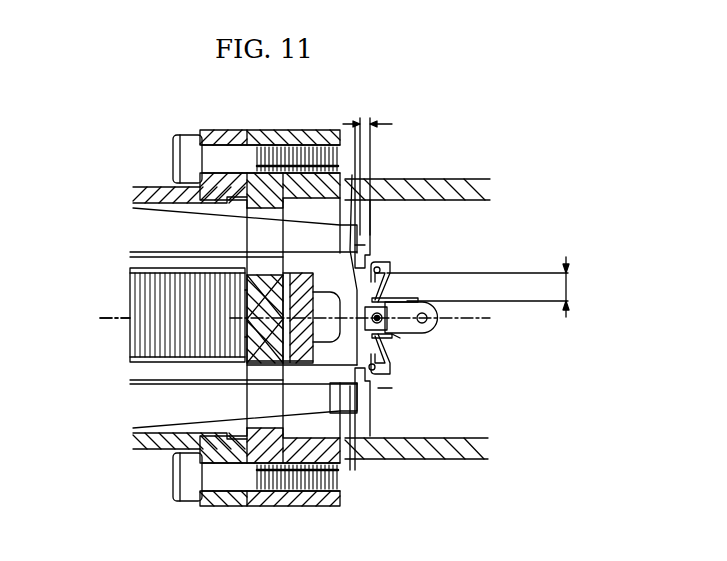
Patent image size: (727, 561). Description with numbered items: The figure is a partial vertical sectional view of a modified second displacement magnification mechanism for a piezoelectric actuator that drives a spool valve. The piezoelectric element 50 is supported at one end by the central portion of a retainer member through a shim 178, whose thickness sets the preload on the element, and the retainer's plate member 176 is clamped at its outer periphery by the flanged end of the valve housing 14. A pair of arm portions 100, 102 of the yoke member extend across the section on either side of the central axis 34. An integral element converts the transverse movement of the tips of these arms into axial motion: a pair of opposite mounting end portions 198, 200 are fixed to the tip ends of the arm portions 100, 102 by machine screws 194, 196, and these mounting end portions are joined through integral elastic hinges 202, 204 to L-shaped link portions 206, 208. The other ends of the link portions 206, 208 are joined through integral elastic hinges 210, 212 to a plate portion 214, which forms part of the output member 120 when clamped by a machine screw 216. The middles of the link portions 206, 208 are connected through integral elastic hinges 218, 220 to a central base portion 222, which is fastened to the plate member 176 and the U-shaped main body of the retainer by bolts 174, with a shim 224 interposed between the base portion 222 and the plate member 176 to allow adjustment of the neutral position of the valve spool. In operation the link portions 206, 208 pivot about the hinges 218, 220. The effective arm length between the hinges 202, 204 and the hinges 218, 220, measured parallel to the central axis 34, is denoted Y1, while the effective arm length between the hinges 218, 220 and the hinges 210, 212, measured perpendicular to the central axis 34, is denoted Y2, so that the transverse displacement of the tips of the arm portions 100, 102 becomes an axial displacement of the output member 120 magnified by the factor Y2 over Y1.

The arm portion 100 is at (153, 222).
The arm portion 102 is at (133, 410).
The valve housing 14 is at (430, 186).
The plate member 176 is at (270, 137).
The shim 178 is at (237, 345).
The piezoelectric element 50 is at (157, 309).
The machine screw 216 is at (245, 297).
The bolt 174 is at (245, 337).
The central axis 34 is at (112, 317).
The central base portion 222 is at (327, 287).
The shim 224 is at (302, 353).
The mounting end portion 198 is at (352, 175).
The machine screw 194 is at (372, 232).
The machine screw 196 is at (365, 390).
The mounting end portion 200 is at (347, 402).
The integral elastic hinge 202 is at (370, 247).
The L-shaped link portion 206 is at (400, 272).
The L-shaped link portion 208 is at (385, 375).
The integral elastic hinge 218 is at (378, 268).
The integral elastic hinge 220 is at (380, 378).
The integral elastic hinge 210 is at (380, 300).
The integral elastic hinge 212 is at (385, 340).
The plate portion 214 is at (398, 338).
The integral elastic hinge 204 is at (380, 393).
The output member 120 is at (420, 302).
The effective arm length Y1 is at (367, 165).
The effective arm length Y2 is at (577, 287).